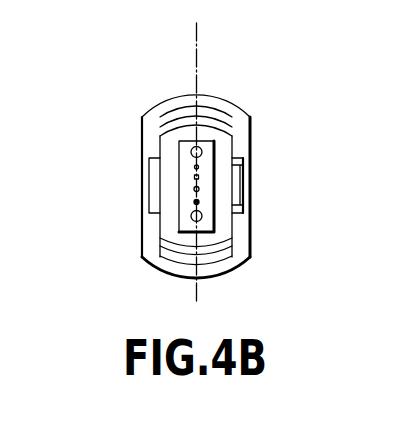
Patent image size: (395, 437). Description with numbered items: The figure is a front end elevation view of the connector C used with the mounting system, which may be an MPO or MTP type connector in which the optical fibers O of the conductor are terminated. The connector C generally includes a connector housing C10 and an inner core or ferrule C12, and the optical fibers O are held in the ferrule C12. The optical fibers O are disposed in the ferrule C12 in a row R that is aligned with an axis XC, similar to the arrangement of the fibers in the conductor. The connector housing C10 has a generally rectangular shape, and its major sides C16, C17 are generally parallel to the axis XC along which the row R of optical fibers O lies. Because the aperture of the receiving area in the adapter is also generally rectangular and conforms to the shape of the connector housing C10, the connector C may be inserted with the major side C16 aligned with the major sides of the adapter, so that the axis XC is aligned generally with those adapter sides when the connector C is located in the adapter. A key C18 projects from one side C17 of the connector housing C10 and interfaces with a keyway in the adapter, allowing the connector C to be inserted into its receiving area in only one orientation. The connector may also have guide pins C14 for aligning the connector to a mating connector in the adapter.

The axis XC is at (197, 62).
The connector C is at (250, 232).
The major side C17 is at (252, 204).
The major side C16 is at (142, 140).
The connector housing C10 is at (142, 160).
The key C18 is at (244, 180).
The ferrule C12 is at (198, 166).
The row R is at (198, 176).
The optical fibers O is at (194, 189).
The guide pins C14 is at (197, 217).